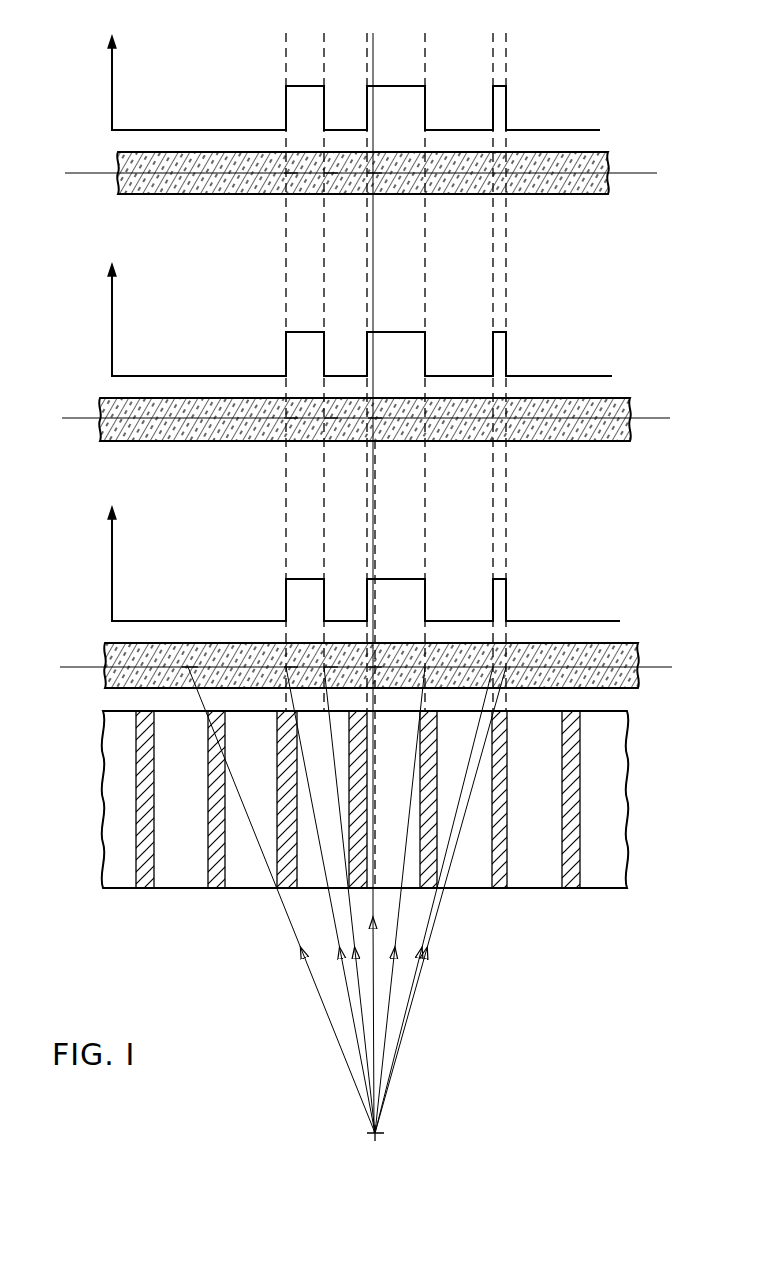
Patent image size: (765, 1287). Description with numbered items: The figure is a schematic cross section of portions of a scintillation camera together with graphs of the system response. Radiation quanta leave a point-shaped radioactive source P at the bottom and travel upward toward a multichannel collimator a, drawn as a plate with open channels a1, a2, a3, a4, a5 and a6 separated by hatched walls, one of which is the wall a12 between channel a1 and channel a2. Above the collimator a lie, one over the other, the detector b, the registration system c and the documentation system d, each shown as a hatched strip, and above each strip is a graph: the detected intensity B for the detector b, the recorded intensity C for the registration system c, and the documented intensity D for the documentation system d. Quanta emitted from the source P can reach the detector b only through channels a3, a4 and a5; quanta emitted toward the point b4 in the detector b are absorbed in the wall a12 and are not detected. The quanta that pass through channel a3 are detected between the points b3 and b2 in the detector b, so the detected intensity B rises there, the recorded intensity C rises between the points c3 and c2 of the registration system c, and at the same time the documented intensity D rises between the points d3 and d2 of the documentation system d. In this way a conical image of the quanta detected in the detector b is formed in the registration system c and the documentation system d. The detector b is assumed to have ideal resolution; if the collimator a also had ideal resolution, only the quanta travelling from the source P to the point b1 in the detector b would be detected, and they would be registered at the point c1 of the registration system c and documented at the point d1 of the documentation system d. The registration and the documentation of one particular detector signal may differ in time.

The multichannel collimator a is at (622, 770).
The channel a1 is at (183, 873).
The channel a2 is at (252, 873).
The channel a3 is at (317, 873).
The channel a4 is at (410, 873).
The channel a5 is at (463, 873).
The channel a6 is at (542, 873).
The wall a12 is at (217, 882).
The detector b is at (630, 655).
The point b1 is at (377, 664).
The point b2 is at (332, 664).
The point b3 is at (292, 664).
The point b4 is at (192, 664).
The registration system c is at (622, 410).
The point c1 is at (377, 414).
The point c2 is at (331, 414).
The point c3 is at (291, 414).
The documentation system d is at (600, 163).
The point d1 is at (376, 165).
The point d2 is at (331, 166).
The point d3 is at (291, 166).
The point-shaped radioactive source P is at (371, 1137).
The detected intensity B is at (345, 564).
The recorded intensity C is at (341, 319).
The documented intensity D is at (335, 82).